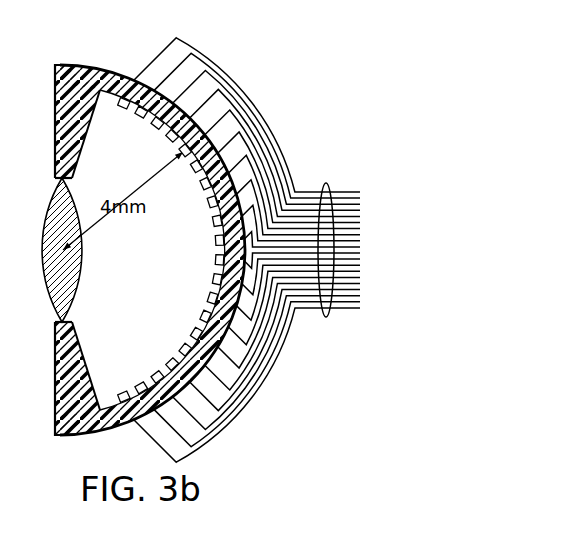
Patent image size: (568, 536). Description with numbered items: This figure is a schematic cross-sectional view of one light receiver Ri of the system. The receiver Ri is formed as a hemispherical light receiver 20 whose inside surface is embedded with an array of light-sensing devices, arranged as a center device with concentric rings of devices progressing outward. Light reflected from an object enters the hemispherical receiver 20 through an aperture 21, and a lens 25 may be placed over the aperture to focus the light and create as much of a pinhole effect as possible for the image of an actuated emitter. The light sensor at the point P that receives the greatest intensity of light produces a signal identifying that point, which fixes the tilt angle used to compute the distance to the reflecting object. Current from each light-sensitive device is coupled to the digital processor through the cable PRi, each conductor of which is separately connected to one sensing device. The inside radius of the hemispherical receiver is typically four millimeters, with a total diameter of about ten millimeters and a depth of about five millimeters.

The hemispherical light receiver 20 is at (57, 434).
The aperture 21 is at (72, 322).
The lens 25 is at (45, 275).
The point receiving greatest light intensity P is at (178, 150).
The receiver Ri is at (100, 58).
The cable PRi is at (344, 164).